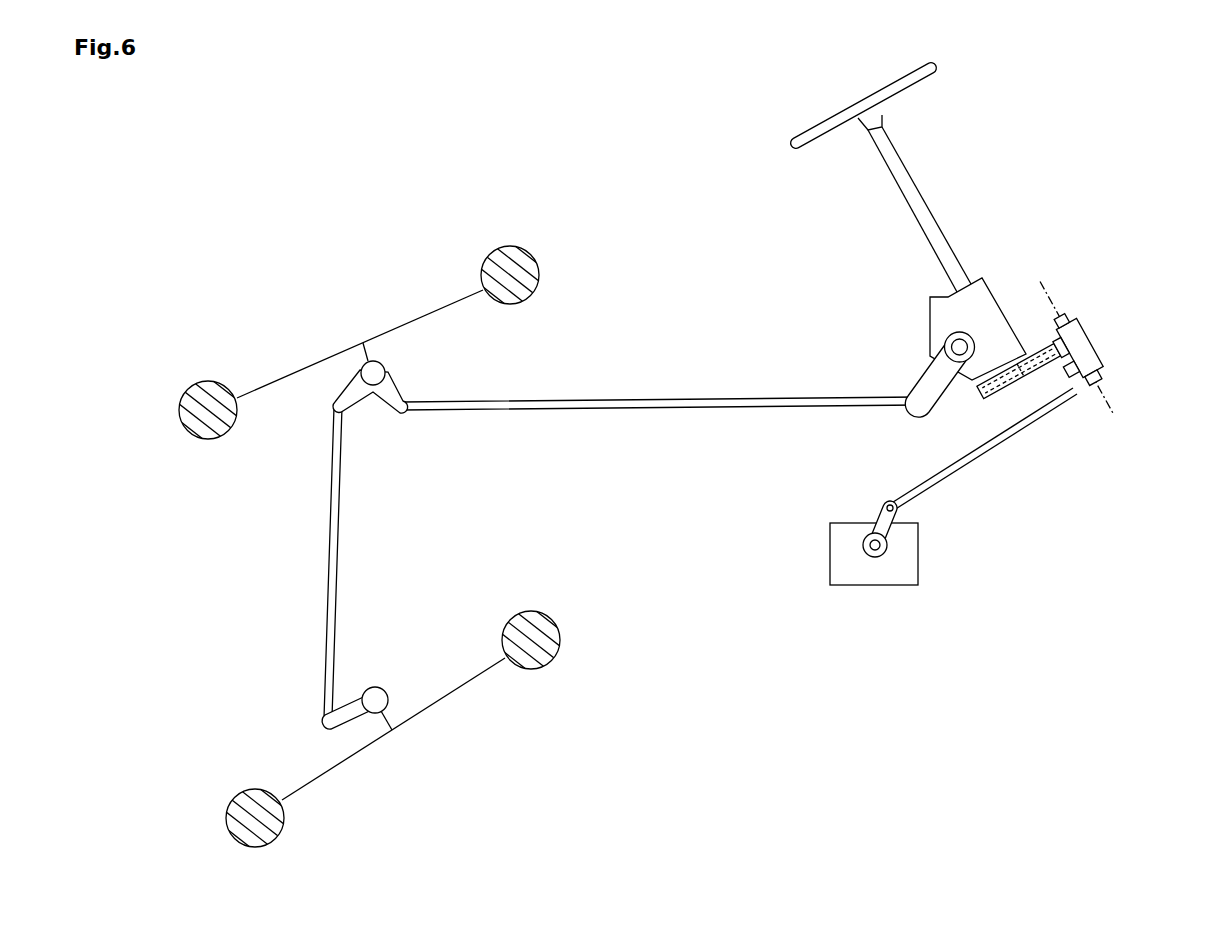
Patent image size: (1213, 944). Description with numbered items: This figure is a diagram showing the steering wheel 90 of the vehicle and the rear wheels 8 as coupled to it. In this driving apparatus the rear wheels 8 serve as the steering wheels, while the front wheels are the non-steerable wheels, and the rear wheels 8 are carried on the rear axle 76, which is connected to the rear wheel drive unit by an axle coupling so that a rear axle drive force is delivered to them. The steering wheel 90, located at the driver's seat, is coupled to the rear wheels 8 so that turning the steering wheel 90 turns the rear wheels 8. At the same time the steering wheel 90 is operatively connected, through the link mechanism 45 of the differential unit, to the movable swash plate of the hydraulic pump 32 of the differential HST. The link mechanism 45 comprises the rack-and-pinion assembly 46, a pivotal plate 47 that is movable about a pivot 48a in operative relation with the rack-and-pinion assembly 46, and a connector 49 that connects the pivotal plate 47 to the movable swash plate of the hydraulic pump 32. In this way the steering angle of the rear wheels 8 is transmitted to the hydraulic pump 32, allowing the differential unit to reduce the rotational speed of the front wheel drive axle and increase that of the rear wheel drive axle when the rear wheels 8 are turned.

The rear wheels 8 is at (522, 280).
The hydraulic pump 32 is at (950, 542).
The link mechanism 45 is at (1113, 352).
The rack-and-pinion assembly 46 is at (1045, 370).
The pivotal plate 47 is at (1078, 330).
The pivot 48a is at (1073, 320).
The connector 49 is at (993, 452).
The rear axle 76 is at (367, 347).
The steering wheel 90 is at (898, 90).